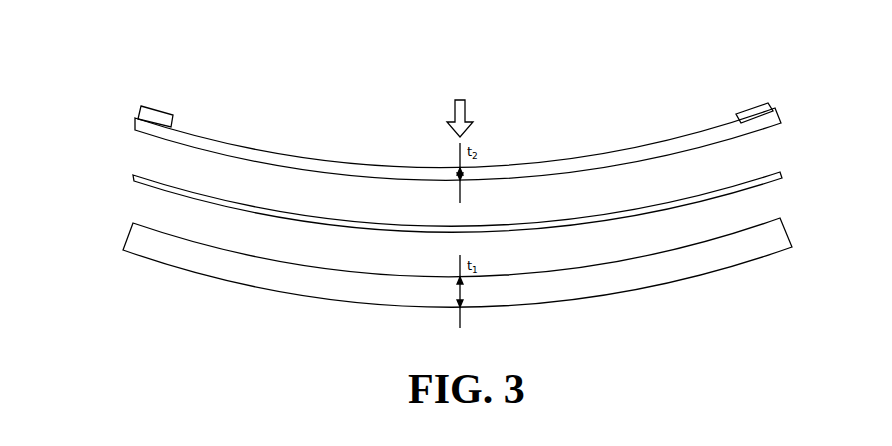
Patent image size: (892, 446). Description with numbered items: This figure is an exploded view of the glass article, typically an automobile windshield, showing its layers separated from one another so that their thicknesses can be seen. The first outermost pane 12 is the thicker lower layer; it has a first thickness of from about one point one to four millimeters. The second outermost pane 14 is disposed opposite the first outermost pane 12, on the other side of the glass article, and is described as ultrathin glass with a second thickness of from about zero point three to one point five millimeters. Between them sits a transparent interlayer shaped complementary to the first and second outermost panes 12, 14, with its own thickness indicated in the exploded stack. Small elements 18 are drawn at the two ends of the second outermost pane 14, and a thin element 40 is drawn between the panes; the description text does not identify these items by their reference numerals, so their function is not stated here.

The first outermost pane 12 is at (127, 240).
The second outermost pane 14 is at (137, 124).
The end pads / electrodes 18 is at (136, 106).
The intermediate thin layer 40 is at (133, 178).